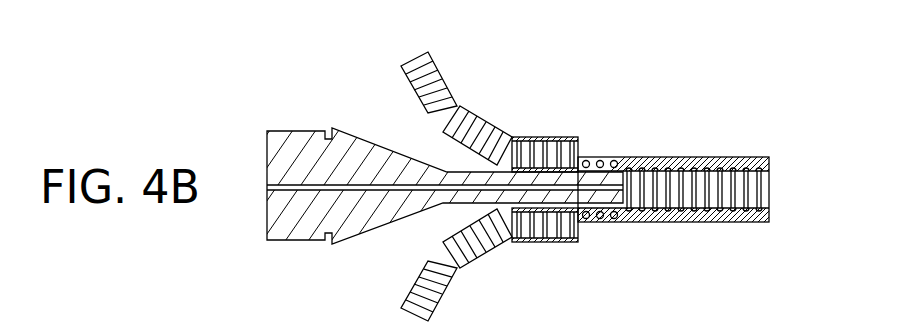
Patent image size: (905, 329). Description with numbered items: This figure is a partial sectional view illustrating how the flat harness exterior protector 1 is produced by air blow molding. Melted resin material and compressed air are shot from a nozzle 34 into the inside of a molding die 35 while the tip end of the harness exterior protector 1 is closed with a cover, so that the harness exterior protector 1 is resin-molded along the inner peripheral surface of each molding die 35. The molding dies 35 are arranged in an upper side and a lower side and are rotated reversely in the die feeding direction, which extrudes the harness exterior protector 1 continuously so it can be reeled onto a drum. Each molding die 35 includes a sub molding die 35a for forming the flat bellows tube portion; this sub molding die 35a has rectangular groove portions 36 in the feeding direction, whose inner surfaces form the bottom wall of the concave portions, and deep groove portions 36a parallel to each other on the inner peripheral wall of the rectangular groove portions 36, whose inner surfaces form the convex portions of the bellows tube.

The harness exterior protector 1 is at (700, 138).
The nozzle 34 is at (390, 148).
The molding die 35 is at (553, 137).
The sub molding die 35a is at (667, 158).
The rectangular groove portion 36 is at (578, 157).
The deep groove portion 36a is at (572, 158).